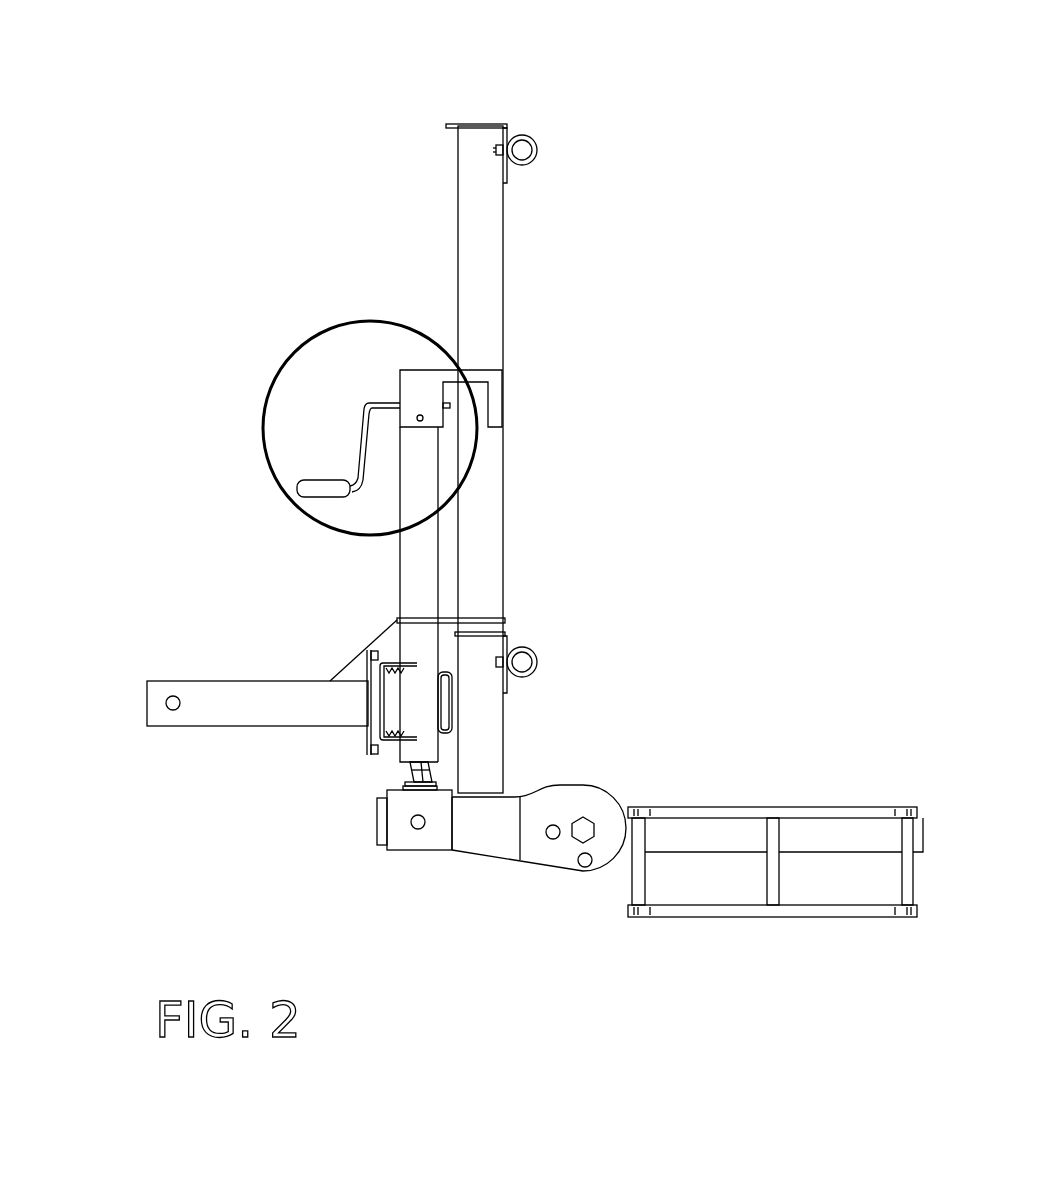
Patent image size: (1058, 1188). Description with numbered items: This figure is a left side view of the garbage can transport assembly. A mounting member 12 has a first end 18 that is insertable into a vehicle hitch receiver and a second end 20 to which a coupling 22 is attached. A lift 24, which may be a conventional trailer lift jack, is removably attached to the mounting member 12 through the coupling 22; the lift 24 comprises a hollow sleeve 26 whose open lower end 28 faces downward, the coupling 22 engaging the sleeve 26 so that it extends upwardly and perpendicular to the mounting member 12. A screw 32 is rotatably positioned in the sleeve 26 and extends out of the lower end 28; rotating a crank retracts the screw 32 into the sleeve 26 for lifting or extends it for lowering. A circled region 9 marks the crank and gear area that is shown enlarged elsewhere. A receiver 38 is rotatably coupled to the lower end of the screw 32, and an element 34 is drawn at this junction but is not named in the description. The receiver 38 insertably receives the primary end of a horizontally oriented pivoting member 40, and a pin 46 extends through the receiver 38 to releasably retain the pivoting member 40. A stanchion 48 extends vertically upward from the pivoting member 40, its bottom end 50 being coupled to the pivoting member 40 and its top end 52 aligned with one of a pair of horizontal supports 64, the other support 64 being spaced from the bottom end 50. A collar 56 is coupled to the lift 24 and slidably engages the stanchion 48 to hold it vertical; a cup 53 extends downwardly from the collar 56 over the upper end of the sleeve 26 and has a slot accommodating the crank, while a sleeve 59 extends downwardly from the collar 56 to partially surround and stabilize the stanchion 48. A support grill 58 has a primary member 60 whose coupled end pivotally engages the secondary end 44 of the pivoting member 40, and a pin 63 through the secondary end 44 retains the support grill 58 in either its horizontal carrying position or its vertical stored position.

The detail view circle 9 is at (272, 383).
The mounting member 12 is at (225, 727).
The first end 18 is at (147, 702).
The second end 20 is at (370, 748).
The coupling 22 is at (366, 650).
The lift 24 is at (400, 568).
The sleeve 26 is at (438, 548).
The lower end 28 is at (405, 775).
The screw 32 is at (430, 778).
The ram 34 is at (423, 790).
The receiver 38 is at (388, 850).
The pivoting member 40 is at (495, 862).
The secondary end 44 is at (590, 785).
The pin 46 is at (417, 830).
The stanchion 48 is at (503, 248).
The bottom end 50 is at (478, 843).
The top end 52 is at (480, 128).
The cup 53 is at (398, 387).
The collar 56 is at (473, 370).
The support grill 58 is at (835, 797).
The sleeve 59 is at (503, 400).
The primary member 60 is at (818, 852).
The pin 63 is at (585, 868).
The supports 64 is at (506, 126).